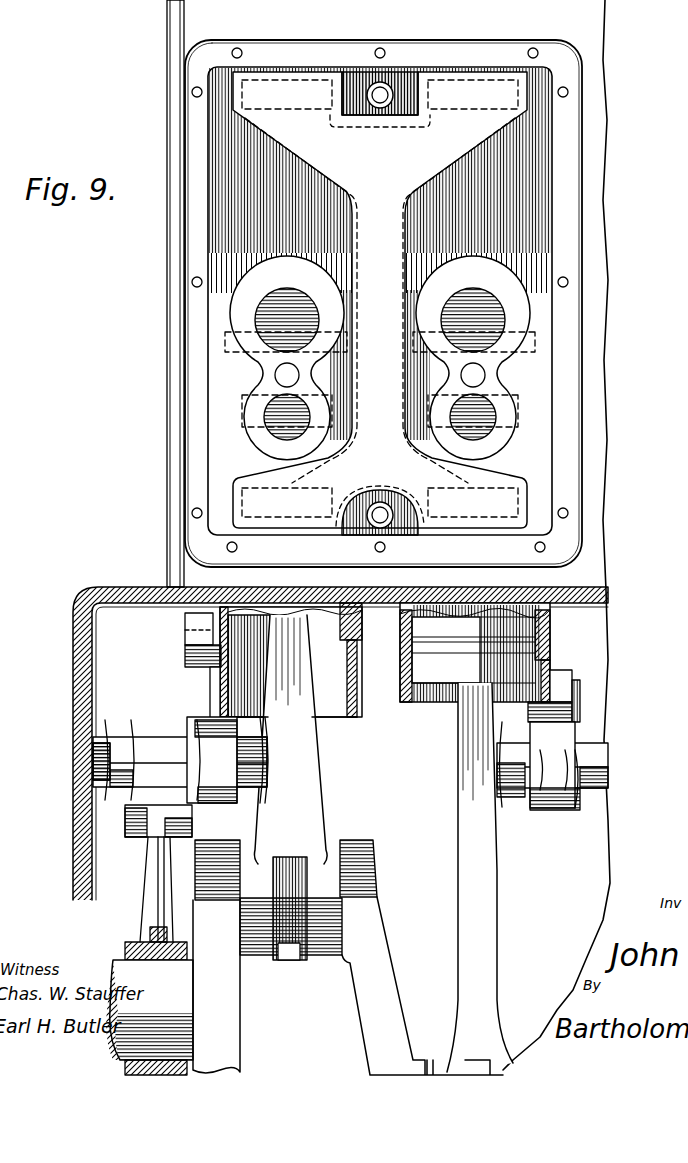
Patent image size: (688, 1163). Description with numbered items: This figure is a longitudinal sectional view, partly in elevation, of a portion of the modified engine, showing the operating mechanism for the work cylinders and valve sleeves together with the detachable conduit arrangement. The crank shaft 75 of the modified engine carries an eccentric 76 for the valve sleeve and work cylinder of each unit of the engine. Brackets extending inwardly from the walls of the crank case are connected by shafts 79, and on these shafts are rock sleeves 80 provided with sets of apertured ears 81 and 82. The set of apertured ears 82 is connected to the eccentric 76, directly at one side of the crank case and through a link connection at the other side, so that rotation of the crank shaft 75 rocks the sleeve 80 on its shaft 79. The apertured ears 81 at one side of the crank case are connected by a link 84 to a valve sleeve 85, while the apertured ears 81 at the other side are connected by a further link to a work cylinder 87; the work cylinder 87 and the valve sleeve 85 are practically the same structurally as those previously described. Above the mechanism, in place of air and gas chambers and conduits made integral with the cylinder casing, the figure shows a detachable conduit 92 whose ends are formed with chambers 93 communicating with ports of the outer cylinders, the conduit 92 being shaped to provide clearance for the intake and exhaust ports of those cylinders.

The crank shaft 75 is at (149, 1008).
The eccentric 76 is at (150, 912).
The shaft 79 is at (100, 764).
The rock sleeve 80 is at (160, 747).
The apertured ears 81 is at (200, 757).
The apertured ears 82 is at (140, 838).
The link 84 is at (216, 700).
The valve sleeve 85 is at (400, 632).
The work cylinder 87 is at (352, 693).
The detachable conduit 92 is at (383, 303).
The chamber 93 is at (380, 299).